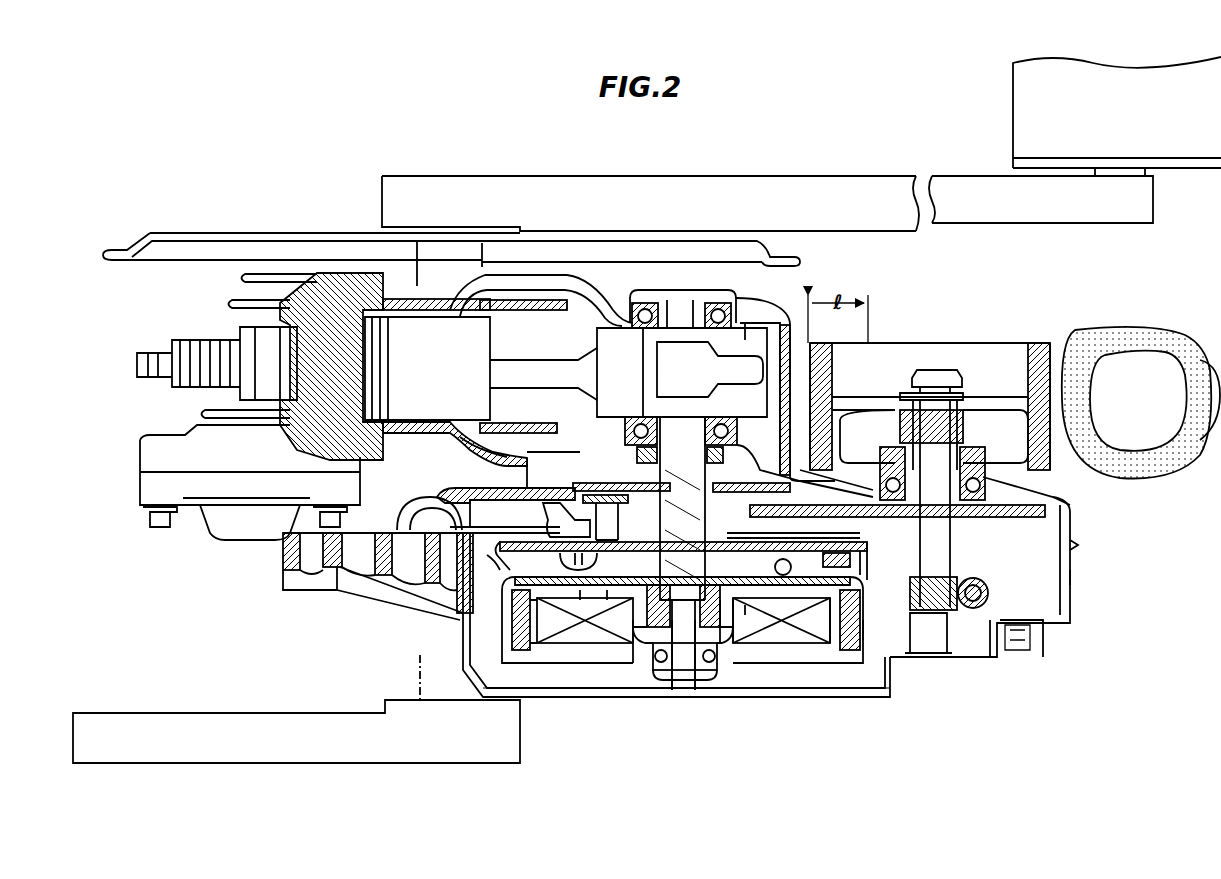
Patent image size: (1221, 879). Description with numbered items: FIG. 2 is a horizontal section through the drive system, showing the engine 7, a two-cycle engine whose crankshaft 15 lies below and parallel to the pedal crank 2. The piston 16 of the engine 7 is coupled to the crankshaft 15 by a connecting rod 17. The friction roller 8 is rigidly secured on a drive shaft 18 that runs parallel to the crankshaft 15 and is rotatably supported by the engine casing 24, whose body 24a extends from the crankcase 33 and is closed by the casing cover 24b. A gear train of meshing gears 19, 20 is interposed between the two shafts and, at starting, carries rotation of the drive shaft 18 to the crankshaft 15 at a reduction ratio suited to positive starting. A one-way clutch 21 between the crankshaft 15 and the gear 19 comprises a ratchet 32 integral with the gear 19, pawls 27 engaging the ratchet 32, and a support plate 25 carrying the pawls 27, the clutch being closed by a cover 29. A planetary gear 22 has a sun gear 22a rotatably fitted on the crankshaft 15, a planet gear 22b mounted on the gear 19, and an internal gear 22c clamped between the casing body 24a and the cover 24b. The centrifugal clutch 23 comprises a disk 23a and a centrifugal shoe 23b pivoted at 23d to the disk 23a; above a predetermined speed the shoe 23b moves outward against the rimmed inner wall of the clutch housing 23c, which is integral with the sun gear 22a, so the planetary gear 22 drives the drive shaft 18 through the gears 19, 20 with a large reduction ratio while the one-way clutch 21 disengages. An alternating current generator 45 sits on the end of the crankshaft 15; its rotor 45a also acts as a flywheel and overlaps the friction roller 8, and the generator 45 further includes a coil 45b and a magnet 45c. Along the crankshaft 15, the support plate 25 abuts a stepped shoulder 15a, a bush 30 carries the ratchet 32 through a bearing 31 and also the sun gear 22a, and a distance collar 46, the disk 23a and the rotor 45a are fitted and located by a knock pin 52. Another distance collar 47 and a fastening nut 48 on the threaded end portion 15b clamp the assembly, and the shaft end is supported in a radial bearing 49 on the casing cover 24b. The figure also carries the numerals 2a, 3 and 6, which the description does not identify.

The pedal crank 2 is at (848, 186).
The center line of main body 2a is at (420, 672).
The cover plate 3 is at (275, 231).
The grommet / handle grip 6 is at (1112, 341).
The engine 7 is at (452, 266).
The friction roller 8 is at (1000, 343).
The crankshaft 15 is at (684, 420).
The stepped shoulder 15a is at (676, 622).
The threaded end portion 15b is at (691, 622).
The piston 16 is at (400, 330).
The connecting rod 17 is at (568, 373).
The drive shaft 18 is at (930, 452).
The gear 19 is at (775, 508).
The gear 20 is at (1050, 510).
The one-way clutch 21 is at (771, 452).
The planetary gear 22 is at (475, 503).
The sun gear 22a is at (751, 615).
The planet gear 22b is at (607, 595).
The internal gear 22c is at (537, 510).
The centrifugal clutch 23 is at (492, 581).
The disk 23a is at (590, 645).
The centrifugal shoe 23b is at (545, 620).
The clutch housing 23c is at (487, 557).
The pivot 23d is at (590, 600).
The engine casing 24 is at (1105, 543).
The engine casing body 24a is at (470, 492).
The casing cover 24b is at (365, 568).
The support plate 25 is at (604, 470).
The pawls 27 is at (580, 478).
The cover 29 is at (803, 468).
The bush 30 is at (692, 500).
The bearing 31 is at (852, 567).
The ratchet 32 is at (540, 490).
The crankcase 33 is at (790, 330).
The alternating current generator 45 is at (749, 673).
The rotor 45a is at (860, 612).
The coil 45b is at (782, 605).
The magnet 45c is at (880, 625).
The distance collar 46 is at (743, 605).
The distance collar 47 is at (641, 620).
The fastening nut 48 is at (698, 660).
The radial bearing 49 is at (745, 590).
The knock pin 52 is at (650, 600).